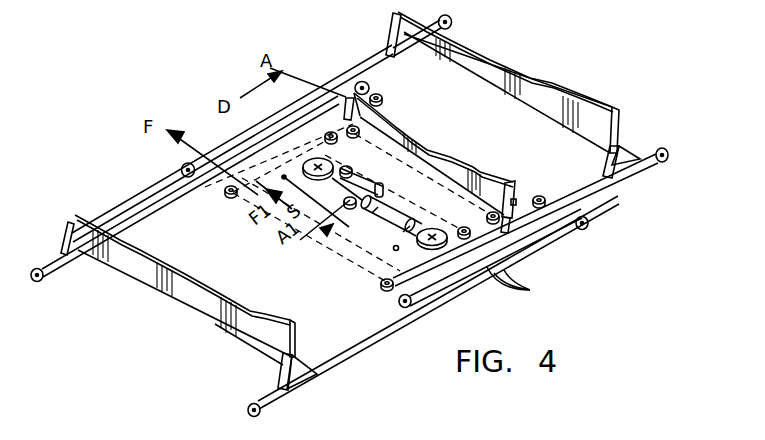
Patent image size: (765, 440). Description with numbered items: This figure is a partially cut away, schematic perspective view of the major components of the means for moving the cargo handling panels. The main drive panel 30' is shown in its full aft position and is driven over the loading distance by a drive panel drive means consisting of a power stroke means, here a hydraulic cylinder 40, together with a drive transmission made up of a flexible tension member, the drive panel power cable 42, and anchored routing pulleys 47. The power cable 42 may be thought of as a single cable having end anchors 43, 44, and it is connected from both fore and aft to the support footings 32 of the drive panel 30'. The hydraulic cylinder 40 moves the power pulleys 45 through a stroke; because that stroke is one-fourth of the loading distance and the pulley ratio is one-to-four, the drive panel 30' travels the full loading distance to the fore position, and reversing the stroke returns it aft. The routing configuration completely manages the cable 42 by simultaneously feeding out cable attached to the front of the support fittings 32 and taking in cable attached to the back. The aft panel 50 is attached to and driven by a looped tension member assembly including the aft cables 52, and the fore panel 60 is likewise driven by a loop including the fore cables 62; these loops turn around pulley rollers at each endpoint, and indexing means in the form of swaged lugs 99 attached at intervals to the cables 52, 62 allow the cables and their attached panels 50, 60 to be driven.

The support footings 32 is at (388, 27).
The aft cables 52 is at (355, 63).
The fore cables 62 is at (140, 209).
The fore panel 60 is at (210, 308).
The aft panel 50 is at (502, 94).
The main drive panel 30' is at (430, 163).
The anchored routing pulleys 47 is at (190, 178).
The drive panel power cable 42 is at (233, 197).
The hydraulic cylinder 40 is at (412, 211).
The power pulleys 45 is at (349, 208).
The end anchor 44 is at (393, 250).
The end anchor 43 is at (258, 192).
The swaged lugs 99 is at (528, 288).